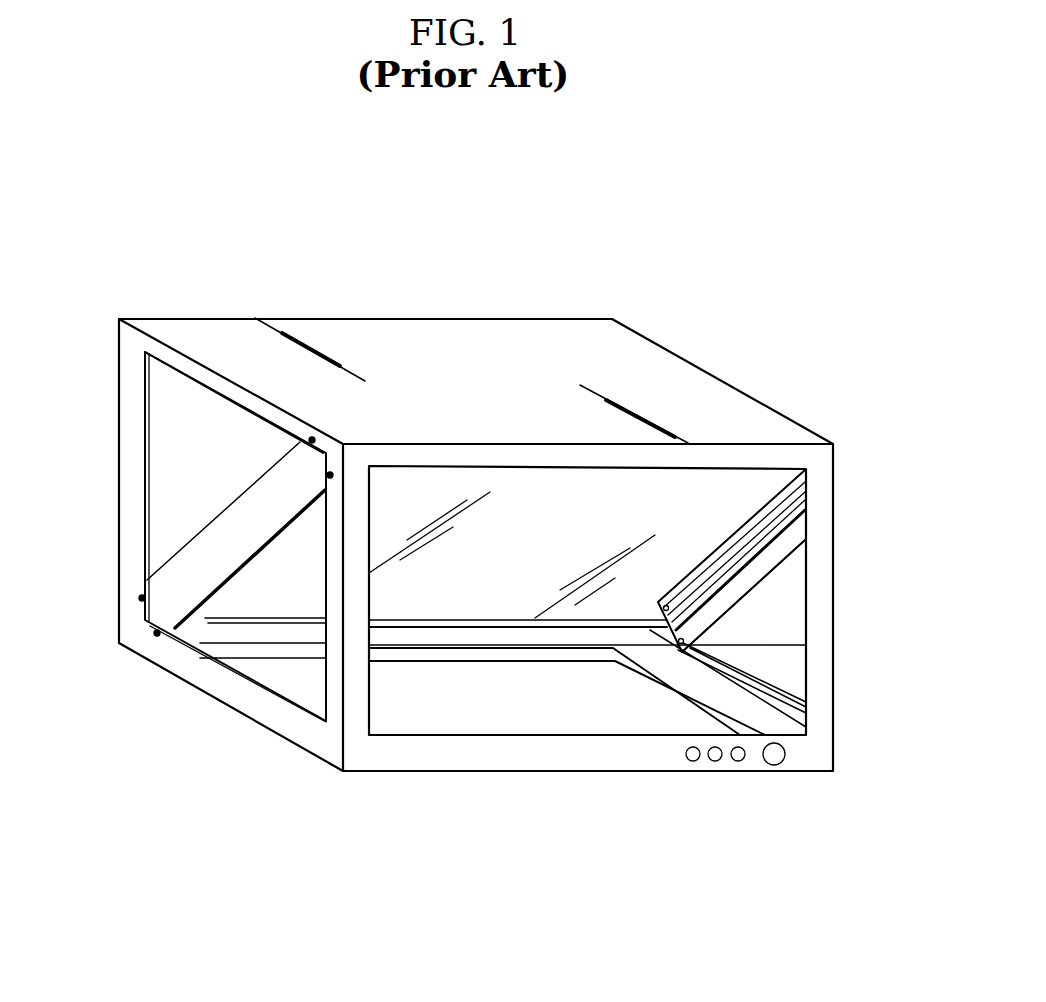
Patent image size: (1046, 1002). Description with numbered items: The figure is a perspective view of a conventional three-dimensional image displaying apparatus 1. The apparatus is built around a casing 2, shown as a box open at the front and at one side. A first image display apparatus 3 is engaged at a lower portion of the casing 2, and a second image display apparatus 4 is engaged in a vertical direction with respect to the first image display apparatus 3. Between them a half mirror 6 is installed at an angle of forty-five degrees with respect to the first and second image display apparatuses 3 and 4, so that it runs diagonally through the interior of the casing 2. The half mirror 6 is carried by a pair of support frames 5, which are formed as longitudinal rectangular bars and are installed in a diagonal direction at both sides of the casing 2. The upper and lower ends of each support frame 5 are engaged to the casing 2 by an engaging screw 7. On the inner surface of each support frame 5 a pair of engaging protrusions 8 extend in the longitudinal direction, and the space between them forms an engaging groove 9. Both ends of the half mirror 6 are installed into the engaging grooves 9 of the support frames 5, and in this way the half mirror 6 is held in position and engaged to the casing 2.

The 3D image displaying apparatus 1 is at (615, 267).
The casing 2 is at (665, 385).
The first image display apparatus 3 is at (598, 705).
The second image display apparatus 4 is at (178, 443).
The support frame 5 is at (255, 517).
The half mirror 6 is at (485, 600).
The engaging screw 7 is at (143, 598).
The engaging protrusion 8 is at (790, 522).
The engaging groove 9 is at (730, 583).